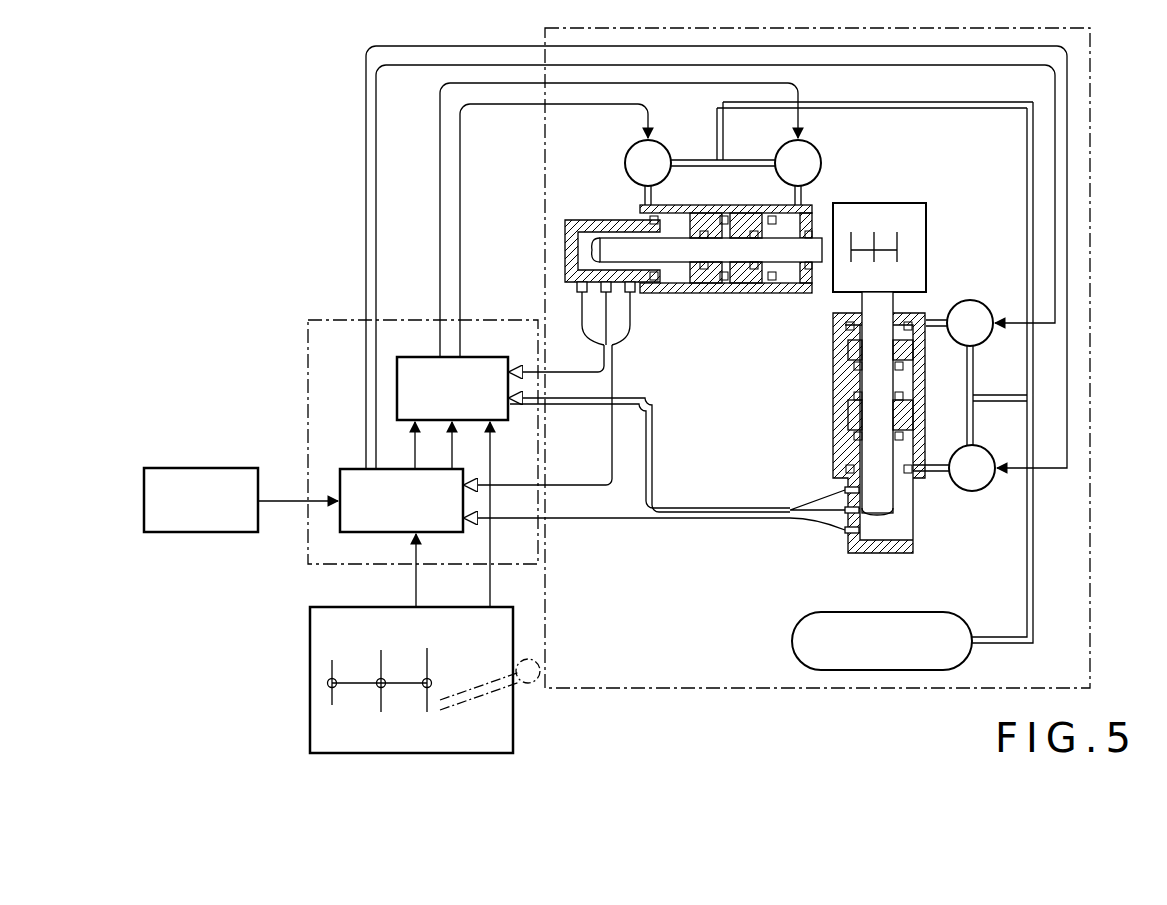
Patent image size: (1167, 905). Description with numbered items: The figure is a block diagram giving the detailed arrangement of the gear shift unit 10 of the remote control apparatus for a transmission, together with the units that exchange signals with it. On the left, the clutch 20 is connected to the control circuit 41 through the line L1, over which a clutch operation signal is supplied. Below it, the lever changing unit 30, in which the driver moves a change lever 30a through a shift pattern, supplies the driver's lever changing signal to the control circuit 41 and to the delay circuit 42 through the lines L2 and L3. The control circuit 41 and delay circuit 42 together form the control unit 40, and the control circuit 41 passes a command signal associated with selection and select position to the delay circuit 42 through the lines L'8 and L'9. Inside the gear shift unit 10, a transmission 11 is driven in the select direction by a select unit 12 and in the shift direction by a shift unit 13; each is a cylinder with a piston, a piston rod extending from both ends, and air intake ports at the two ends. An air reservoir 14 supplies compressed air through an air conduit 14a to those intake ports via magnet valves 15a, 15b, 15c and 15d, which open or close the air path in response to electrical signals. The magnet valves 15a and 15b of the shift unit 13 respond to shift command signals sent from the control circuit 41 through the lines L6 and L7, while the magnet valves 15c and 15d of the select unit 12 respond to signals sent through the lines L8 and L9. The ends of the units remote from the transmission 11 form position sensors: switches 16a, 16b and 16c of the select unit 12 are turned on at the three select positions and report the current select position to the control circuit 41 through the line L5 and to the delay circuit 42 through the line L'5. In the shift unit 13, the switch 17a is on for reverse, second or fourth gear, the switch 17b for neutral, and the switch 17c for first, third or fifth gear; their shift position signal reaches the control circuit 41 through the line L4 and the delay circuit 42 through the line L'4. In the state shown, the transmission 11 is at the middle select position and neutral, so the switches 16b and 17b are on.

The gear shift unit 10 is at (650, 690).
The transmission 11 is at (926, 203).
The select unit 12 is at (748, 292).
The shift unit 13 is at (833, 344).
The air reservoir 14 is at (795, 627).
The air conduit 14a is at (915, 103).
The magnet valve 15a is at (976, 302).
The magnet valve 15b is at (975, 489).
The magnet valve 15c is at (820, 162).
The magnet valve 15d is at (660, 142).
The switch 16a is at (577, 295).
The switch 16b is at (610, 295).
The switch 16c is at (634, 295).
The switch 17a is at (845, 488).
The switch 17b is at (845, 509).
The switch 17c is at (848, 535).
The clutch 20 is at (230, 468).
The lever changing unit 30 is at (310, 645).
The change lever 30a is at (534, 684).
The control unit 40 is at (308, 344).
The control circuit 41 is at (354, 469).
The delay circuit 42 is at (478, 357).
The line L1 is at (278, 499).
The line L2 is at (416, 590).
The line L3 is at (490, 590).
The line L4 is at (585, 518).
The line L5 is at (563, 500).
The line L6 is at (378, 213).
The line L7 is at (364, 211).
The line L8 is at (440, 268).
The line L9 is at (462, 268).
The line L'4 is at (677, 455).
The line L'5 is at (581, 370).
The line L'8 is at (401, 445).
The line L'9 is at (437, 445).